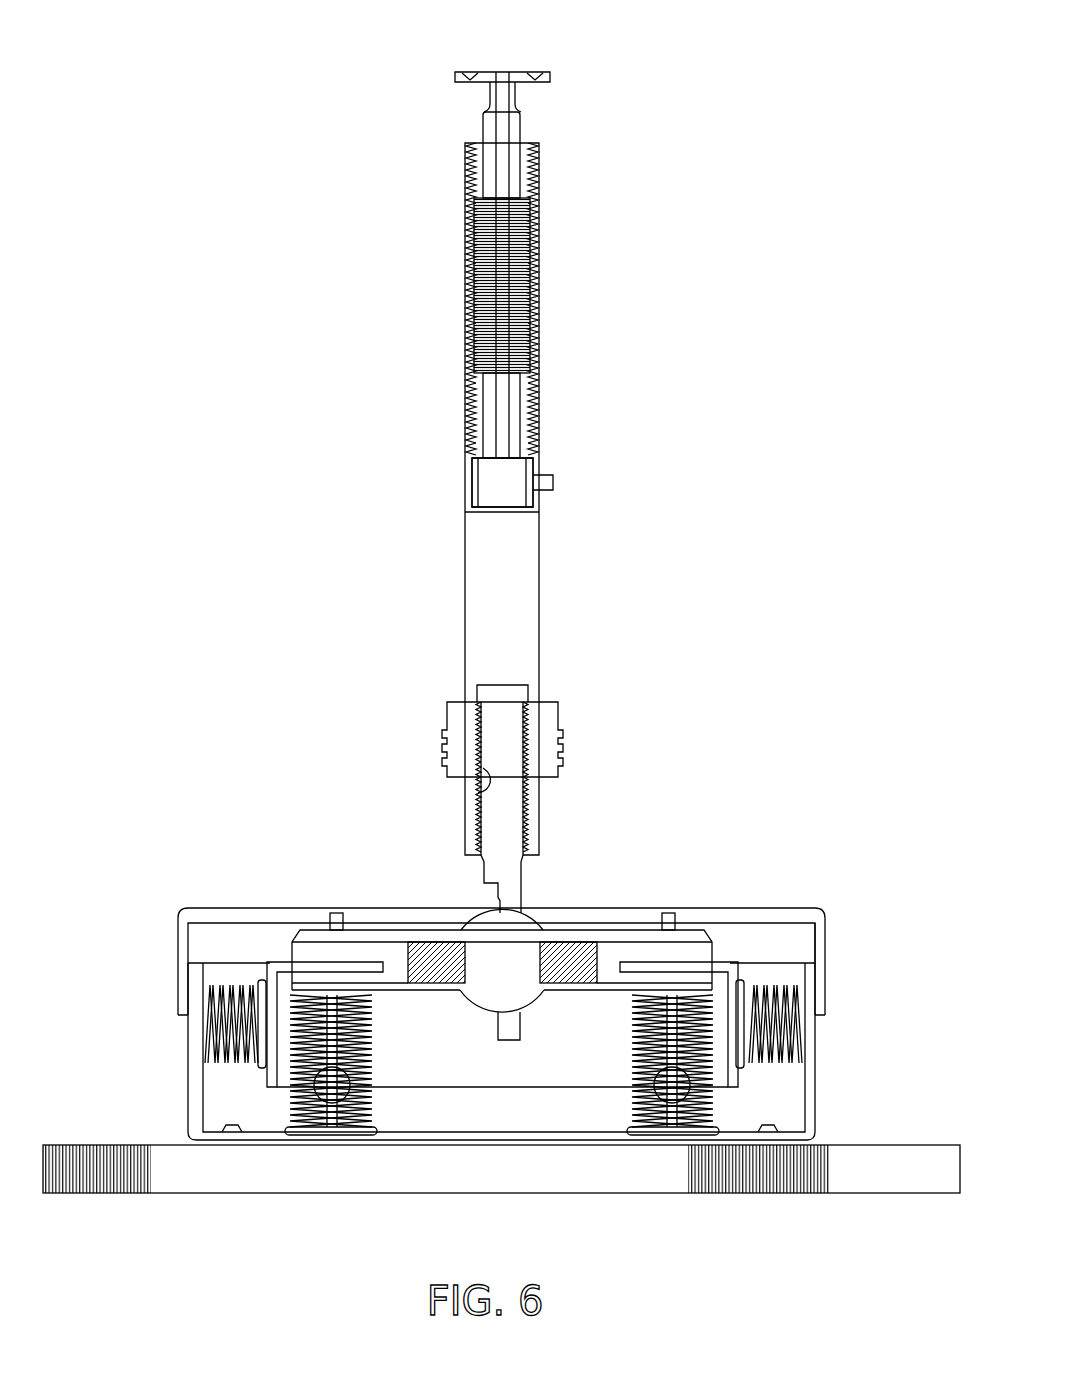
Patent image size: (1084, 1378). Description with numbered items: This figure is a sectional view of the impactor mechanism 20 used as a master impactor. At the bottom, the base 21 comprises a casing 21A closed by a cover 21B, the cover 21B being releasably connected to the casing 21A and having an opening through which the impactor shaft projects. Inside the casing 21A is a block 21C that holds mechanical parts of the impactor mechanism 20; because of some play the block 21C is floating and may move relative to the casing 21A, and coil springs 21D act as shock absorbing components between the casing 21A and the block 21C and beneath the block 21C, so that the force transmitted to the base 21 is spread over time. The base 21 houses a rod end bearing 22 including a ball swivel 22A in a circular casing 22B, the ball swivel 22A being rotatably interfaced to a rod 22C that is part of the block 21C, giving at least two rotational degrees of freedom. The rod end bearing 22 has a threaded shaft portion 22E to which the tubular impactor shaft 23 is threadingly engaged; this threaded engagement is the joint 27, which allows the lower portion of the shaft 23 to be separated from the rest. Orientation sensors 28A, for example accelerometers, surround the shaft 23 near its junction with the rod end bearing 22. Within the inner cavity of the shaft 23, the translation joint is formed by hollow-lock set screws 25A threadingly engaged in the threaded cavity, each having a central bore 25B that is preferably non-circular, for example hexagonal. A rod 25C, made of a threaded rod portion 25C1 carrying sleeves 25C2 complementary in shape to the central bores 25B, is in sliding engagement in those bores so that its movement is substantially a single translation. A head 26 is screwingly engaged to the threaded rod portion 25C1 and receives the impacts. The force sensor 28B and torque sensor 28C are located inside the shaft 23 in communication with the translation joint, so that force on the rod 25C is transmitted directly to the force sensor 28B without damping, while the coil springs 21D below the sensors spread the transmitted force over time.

The impactor mechanism 20 is at (770, 452).
The base 21 is at (825, 879).
The casing 21A is at (820, 1062).
The cover 21B is at (828, 941).
The block 21C is at (505, 1068).
The coil springs 21D is at (343, 1120).
The rod end bearing 22 is at (576, 883).
The ball swivel 22A is at (488, 930).
The circular casing 22B is at (520, 913).
The rod 22C is at (362, 932).
The shaft portion 22E is at (493, 816).
The impactor shaft 23 is at (540, 607).
The hollow-lock set screws 25A is at (539, 182).
The central bore 25B is at (530, 408).
The rod 25C is at (505, 280).
The threaded rod portion 25C1 is at (520, 137).
The sleeves 25C2 is at (484, 135).
The head 26 is at (545, 71).
The joint 27 is at (483, 768).
The orientation sensors 28A is at (560, 750).
The force sensor 28B is at (485, 493).
The torque sensor 28C is at (485, 493).